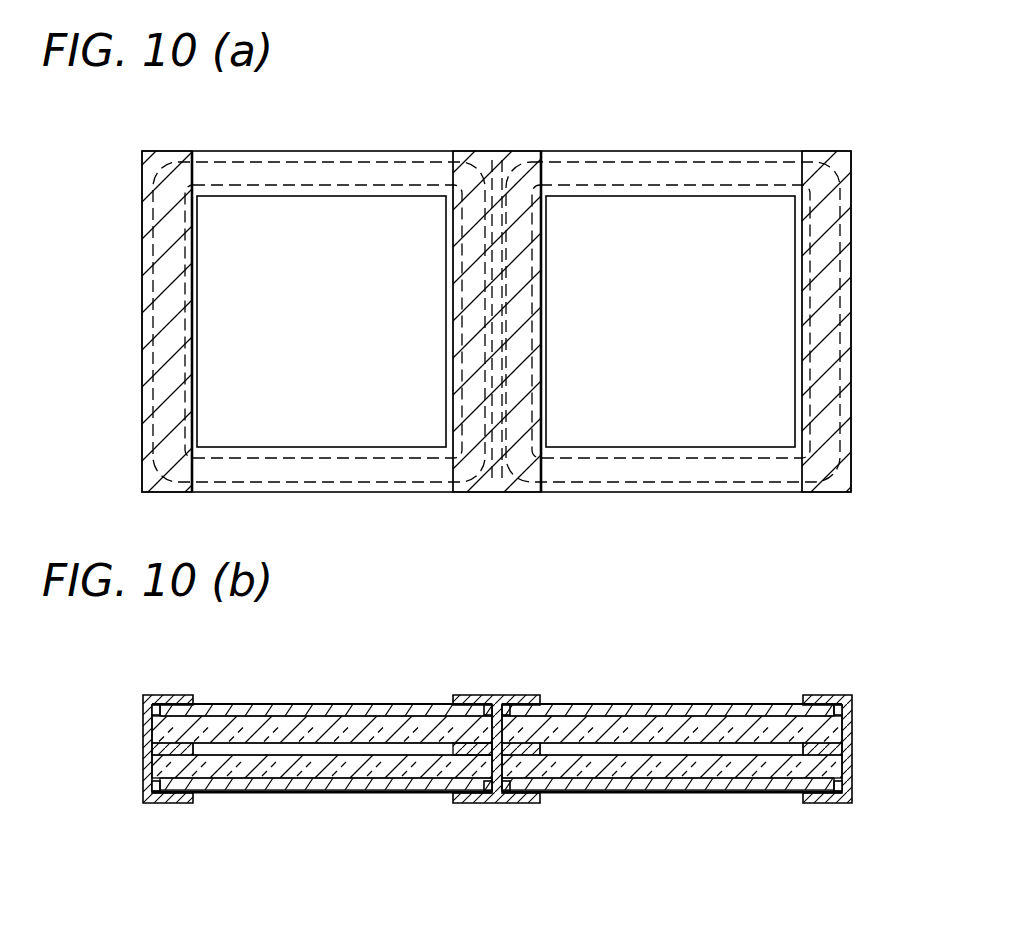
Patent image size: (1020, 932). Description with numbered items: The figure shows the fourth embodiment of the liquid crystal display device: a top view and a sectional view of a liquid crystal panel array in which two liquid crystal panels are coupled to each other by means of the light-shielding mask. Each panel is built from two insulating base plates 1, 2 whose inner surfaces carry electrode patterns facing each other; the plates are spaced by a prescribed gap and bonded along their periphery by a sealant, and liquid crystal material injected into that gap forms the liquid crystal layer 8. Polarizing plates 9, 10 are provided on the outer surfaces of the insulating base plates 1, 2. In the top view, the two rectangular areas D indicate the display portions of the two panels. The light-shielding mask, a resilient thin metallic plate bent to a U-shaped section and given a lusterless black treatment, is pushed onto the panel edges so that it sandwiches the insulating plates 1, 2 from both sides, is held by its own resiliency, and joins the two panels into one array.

The insulating base plate 1 is at (267, 767).
The insulating base plate 2 is at (330, 733).
The liquid crystal layer 8 is at (378, 747).
The polarizing plate 9 is at (213, 797).
The polarizing plate 10 is at (247, 706).
The display portion D is at (768, 258).